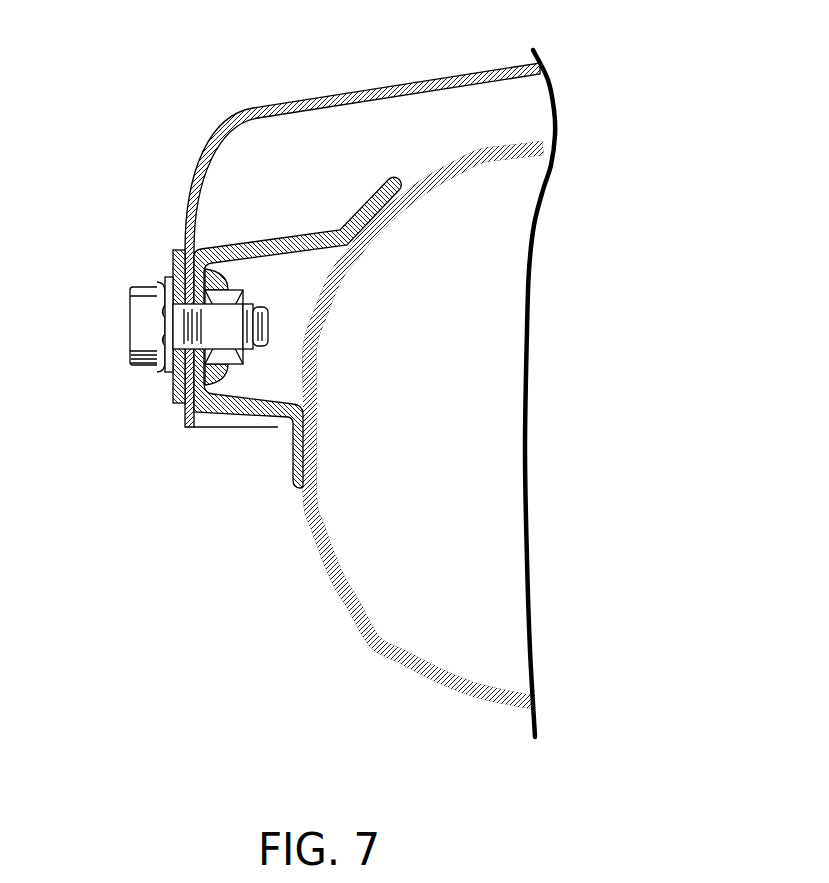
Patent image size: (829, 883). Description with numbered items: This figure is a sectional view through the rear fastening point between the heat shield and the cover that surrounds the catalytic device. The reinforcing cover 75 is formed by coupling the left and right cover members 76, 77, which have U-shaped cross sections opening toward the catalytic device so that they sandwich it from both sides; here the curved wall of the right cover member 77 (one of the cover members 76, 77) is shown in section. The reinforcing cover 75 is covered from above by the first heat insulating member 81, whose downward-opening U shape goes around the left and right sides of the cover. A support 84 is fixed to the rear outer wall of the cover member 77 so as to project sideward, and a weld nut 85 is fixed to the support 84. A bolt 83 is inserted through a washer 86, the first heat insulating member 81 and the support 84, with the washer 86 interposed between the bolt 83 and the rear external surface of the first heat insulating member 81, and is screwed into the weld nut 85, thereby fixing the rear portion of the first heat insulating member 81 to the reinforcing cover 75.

The reinforcing cover 75 is at (356, 631).
The left cover member 76 is at (428, 680).
The right cover member 77 is at (426, 453).
The first heat insulating member 81 is at (397, 85).
The bolt 83 is at (147, 330).
The support 84 is at (274, 240).
The weld nut 85 is at (240, 291).
The washer 86 is at (177, 408).